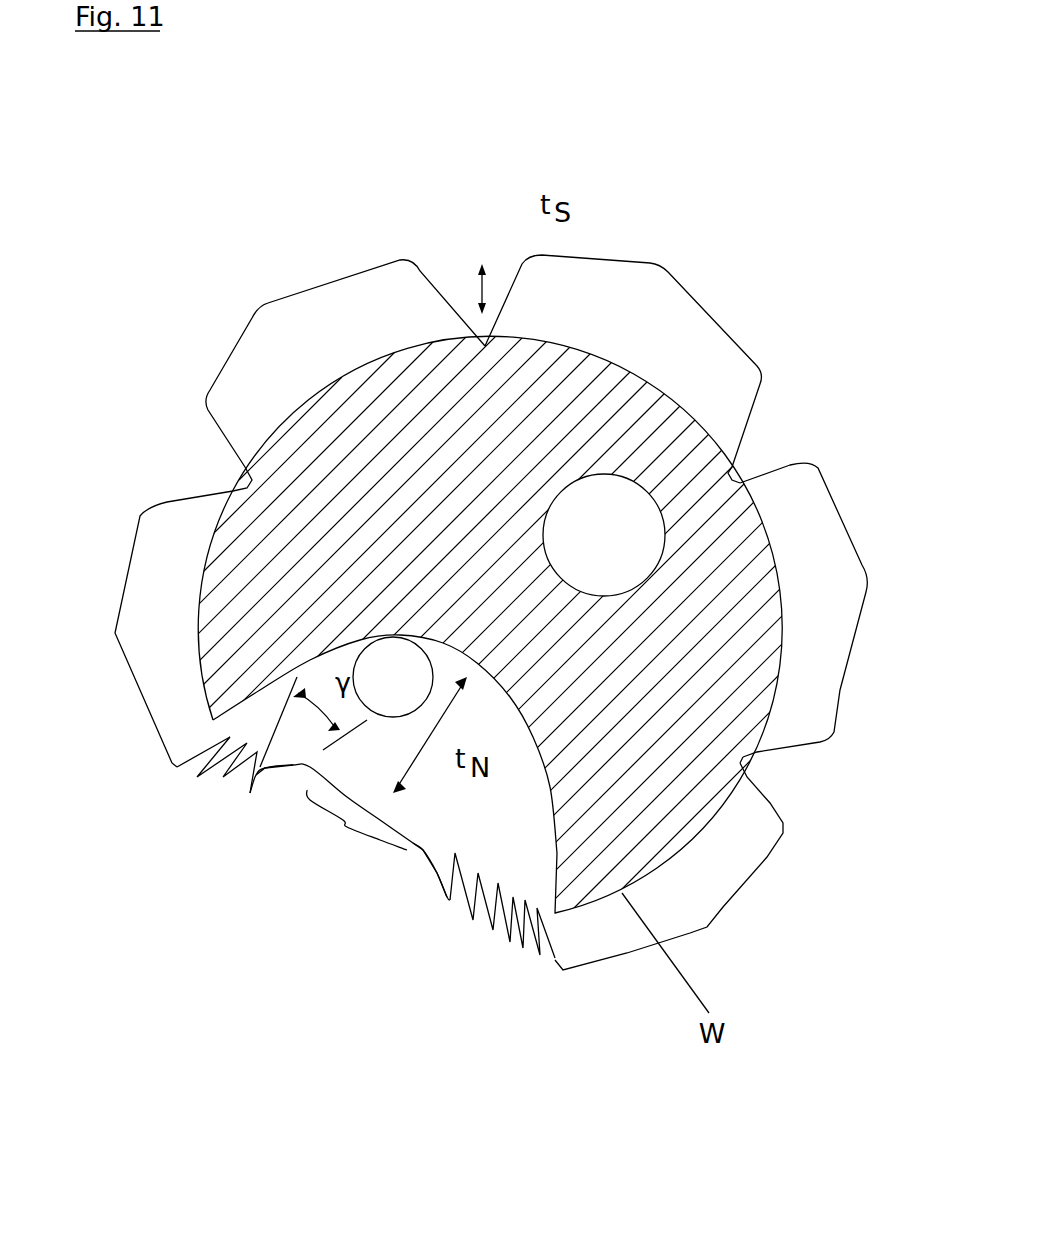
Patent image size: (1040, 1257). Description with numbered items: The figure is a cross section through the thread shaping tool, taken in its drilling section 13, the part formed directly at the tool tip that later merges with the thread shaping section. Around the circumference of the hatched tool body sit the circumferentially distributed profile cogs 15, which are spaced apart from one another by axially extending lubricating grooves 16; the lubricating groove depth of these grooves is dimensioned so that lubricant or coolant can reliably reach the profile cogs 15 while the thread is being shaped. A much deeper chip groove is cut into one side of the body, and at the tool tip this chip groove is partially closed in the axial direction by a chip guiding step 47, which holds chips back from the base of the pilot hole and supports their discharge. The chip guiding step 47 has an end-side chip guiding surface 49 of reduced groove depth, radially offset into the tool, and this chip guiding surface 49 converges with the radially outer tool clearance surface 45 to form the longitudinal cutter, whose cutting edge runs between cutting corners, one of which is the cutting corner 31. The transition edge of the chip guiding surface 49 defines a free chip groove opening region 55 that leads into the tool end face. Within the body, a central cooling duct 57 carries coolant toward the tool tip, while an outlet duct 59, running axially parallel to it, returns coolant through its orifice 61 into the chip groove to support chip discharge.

The drilling section 13 is at (163, 773).
The profile cog 15 is at (377, 302).
The lubricating groove 16 is at (430, 273).
The cutting corner 31 is at (250, 795).
The tool clearance surface 45 is at (230, 800).
The chip guiding step 47 is at (422, 892).
The chip guiding surface 49 is at (270, 777).
The chip groove opening region 55 is at (347, 827).
The central cooling duct 57 is at (642, 483).
The outlet duct 59 is at (392, 668).
The orifice 61 is at (362, 638).